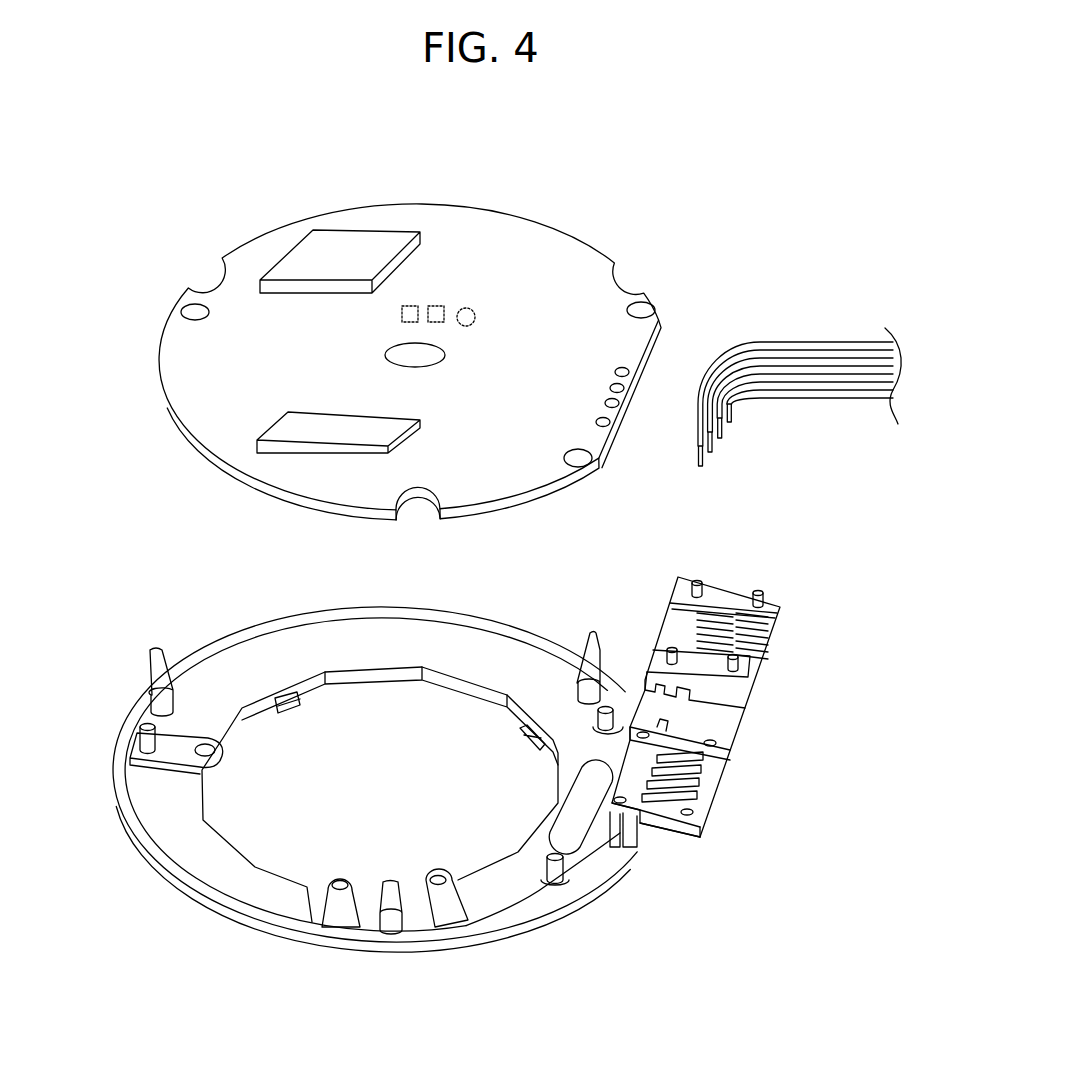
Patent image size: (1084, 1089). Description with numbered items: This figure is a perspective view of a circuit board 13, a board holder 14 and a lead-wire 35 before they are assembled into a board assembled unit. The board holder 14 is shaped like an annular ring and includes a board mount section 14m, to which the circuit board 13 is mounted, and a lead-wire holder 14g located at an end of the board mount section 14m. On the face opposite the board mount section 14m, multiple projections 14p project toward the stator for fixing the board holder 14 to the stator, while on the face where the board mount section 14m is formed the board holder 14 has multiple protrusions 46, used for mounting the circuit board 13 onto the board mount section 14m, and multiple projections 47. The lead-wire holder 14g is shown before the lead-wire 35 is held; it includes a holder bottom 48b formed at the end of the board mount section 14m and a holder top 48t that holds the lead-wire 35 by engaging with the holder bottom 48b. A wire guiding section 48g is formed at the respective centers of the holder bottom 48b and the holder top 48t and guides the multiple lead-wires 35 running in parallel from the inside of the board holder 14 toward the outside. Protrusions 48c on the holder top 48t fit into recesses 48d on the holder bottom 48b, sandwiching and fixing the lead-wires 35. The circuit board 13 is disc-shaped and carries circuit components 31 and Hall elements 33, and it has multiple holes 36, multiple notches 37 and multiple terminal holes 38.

The circuit board 13 is at (167, 421).
The board holder 14 is at (143, 833).
The lead-wire holder 14g is at (772, 723).
The board mount section 14m is at (512, 890).
The projections 14p is at (287, 703).
The circuit components 31 is at (305, 258).
The Hall elements 33 is at (466, 307).
The lead-wire 35 is at (857, 338).
The holes 36 is at (182, 307).
The notches 37 is at (208, 287).
The terminal holes 38 is at (603, 427).
The protrusions 46 is at (146, 733).
The projections 47 is at (152, 668).
The holder bottom 48b is at (703, 827).
The protrusions 48c is at (760, 589).
The recesses 48d is at (702, 838).
The wire guiding section 48g is at (710, 780).
The holder top 48t is at (775, 613).